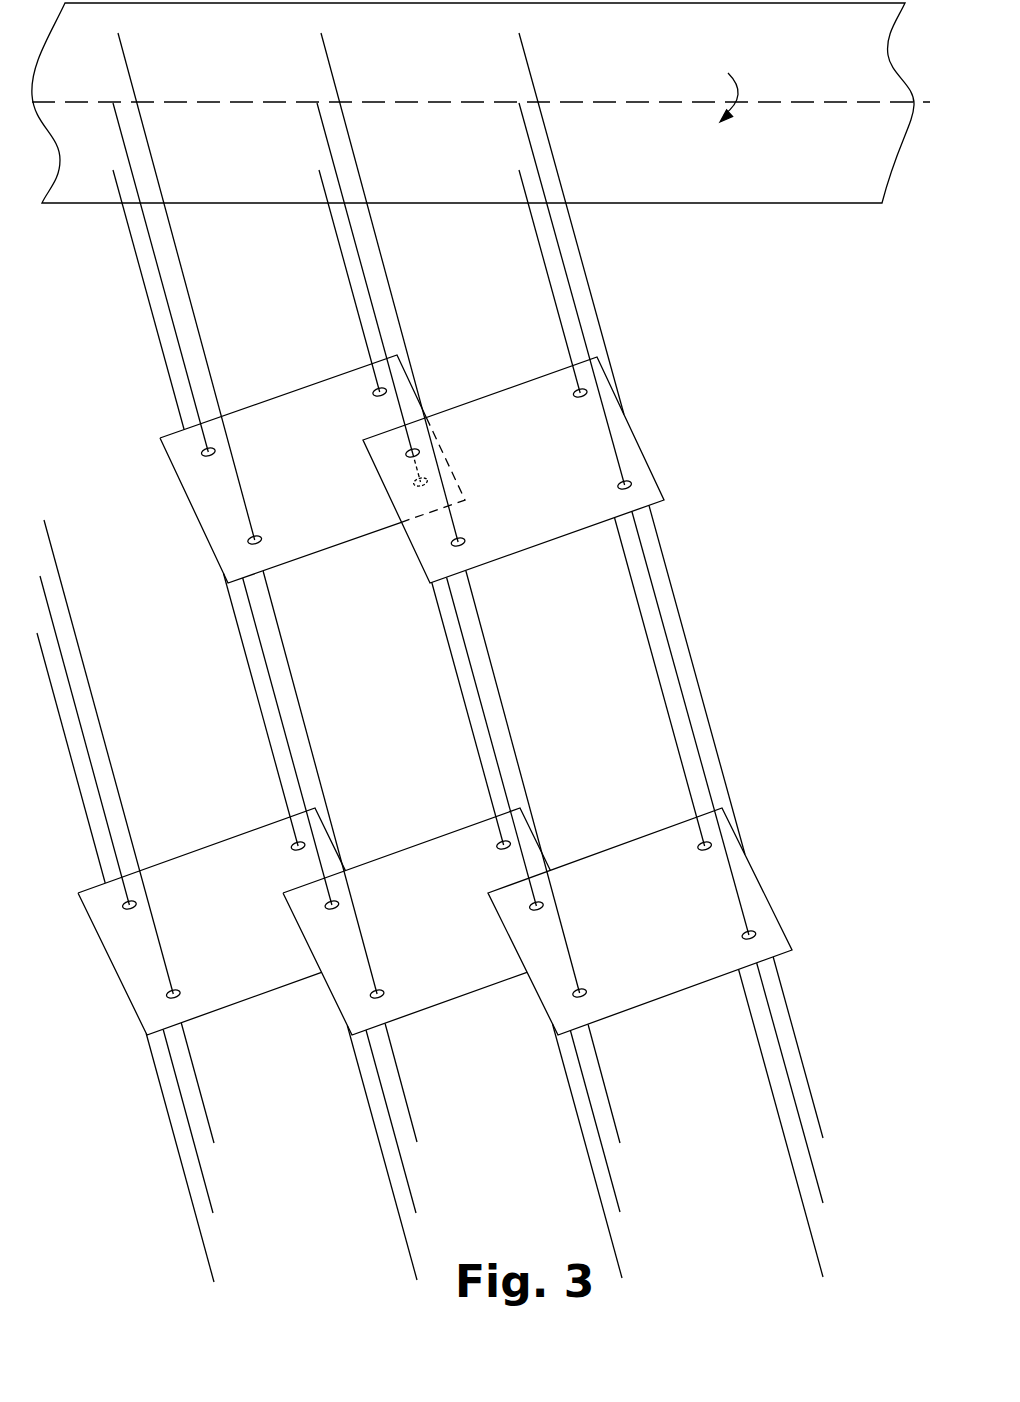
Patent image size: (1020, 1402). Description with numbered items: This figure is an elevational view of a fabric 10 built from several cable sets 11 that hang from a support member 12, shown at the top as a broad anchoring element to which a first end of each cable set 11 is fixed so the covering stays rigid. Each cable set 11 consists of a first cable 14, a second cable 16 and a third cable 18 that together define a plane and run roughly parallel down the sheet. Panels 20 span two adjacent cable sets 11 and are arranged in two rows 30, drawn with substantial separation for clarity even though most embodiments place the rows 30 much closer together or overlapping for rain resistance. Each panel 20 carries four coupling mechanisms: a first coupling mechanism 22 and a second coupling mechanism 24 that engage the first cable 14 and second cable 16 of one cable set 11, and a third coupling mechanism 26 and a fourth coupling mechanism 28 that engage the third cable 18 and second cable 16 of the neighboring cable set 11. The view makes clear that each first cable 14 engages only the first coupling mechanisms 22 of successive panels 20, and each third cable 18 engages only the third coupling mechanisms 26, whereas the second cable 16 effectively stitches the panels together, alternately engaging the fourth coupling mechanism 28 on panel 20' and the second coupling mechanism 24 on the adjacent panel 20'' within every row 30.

The fabric 10 is at (481, 642).
The cable set 11 is at (671, 655).
The support member 12 is at (434, 58).
The first cable 14 is at (693, 667).
The second cable 16 is at (655, 595).
The third cable 18 is at (668, 712).
The panel 20 is at (211, 921).
The panel 20' is at (355, 695).
The panel 20'' is at (561, 696).
The first coupling mechanism 22 is at (456, 536).
The second coupling mechanism 24 is at (408, 457).
The third coupling mechanism 26 is at (576, 396).
The fourth coupling mechanism 28 is at (620, 489).
The row 30 is at (471, 695).